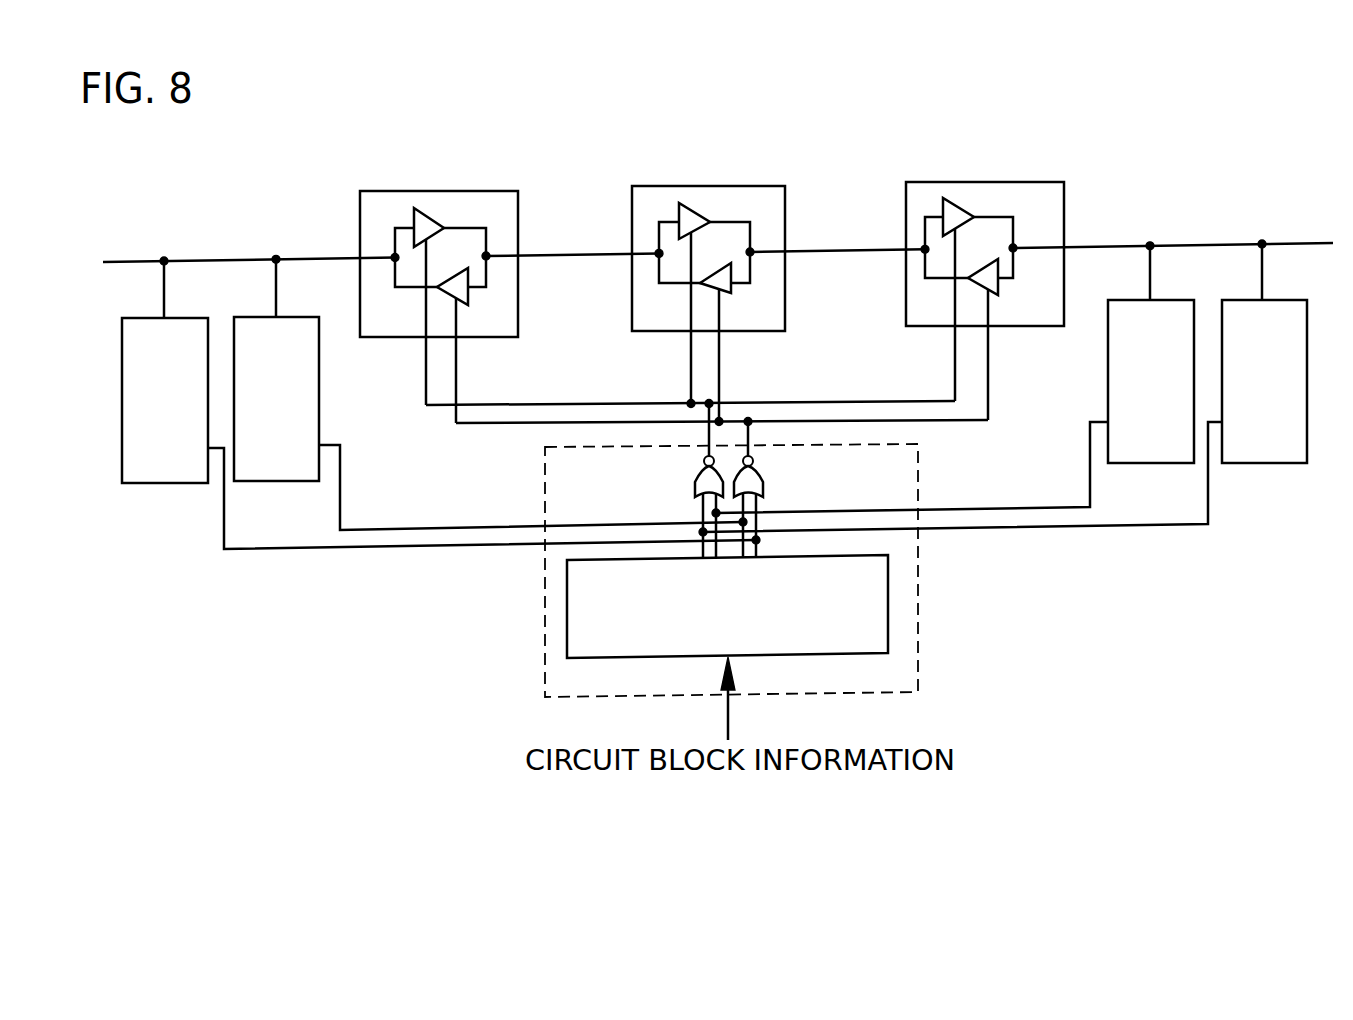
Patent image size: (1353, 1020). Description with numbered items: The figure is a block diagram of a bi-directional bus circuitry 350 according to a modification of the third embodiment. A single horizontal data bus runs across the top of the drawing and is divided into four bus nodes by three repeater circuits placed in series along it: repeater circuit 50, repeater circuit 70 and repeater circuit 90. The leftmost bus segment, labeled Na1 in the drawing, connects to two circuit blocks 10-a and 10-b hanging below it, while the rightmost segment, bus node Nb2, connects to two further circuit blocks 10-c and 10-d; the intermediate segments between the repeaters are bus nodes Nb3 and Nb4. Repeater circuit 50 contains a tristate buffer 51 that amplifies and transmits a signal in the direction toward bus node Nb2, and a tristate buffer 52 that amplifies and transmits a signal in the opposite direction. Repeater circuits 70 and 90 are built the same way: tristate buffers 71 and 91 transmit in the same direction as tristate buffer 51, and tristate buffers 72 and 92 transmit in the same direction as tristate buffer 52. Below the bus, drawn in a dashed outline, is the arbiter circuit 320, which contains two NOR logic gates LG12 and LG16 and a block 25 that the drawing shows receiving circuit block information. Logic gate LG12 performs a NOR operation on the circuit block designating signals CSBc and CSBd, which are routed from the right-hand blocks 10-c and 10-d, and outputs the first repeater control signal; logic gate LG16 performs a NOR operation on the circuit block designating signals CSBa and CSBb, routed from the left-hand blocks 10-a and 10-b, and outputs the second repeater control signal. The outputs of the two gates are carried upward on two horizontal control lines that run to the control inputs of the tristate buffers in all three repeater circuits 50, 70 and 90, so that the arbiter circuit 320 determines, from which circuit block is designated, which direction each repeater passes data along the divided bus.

The bi-directional bus circuitry 350 is at (1284, 115).
The repeater circuit 50 is at (439, 273).
The tristate buffer 51 is at (437, 214).
The tristate buffer 52 is at (463, 293).
The repeater circuit 70 is at (708, 270).
The tristate buffer 71 is at (697, 210).
The tristate buffer 72 is at (728, 293).
The repeater circuit 90 is at (985, 267).
The tristate buffer 91 is at (963, 205).
The tristate buffer 92 is at (998, 290).
The circuit block 10-a is at (167, 484).
The circuit block 10-b is at (285, 482).
The circuit block 10-c is at (1155, 464).
The circuit block 10-d is at (1265, 464).
The logic gate LG12 is at (695, 484).
The logic gate LG16 is at (763, 484).
The decoder 25 is at (889, 612).
The arbiter circuit 320 is at (920, 673).
The node Na1 is at (208, 260).
The bus node Nb2 is at (1191, 242).
The bus node Nb3 is at (574, 255).
The bus node Nb4 is at (837, 250).
The circuit block designating signal CSBa is at (484, 514).
The circuit block designating signal CSBb is at (533, 487).
The circuit block designating signal CSBc is at (910, 469).
The circuit block designating signal CSBd is at (960, 490).